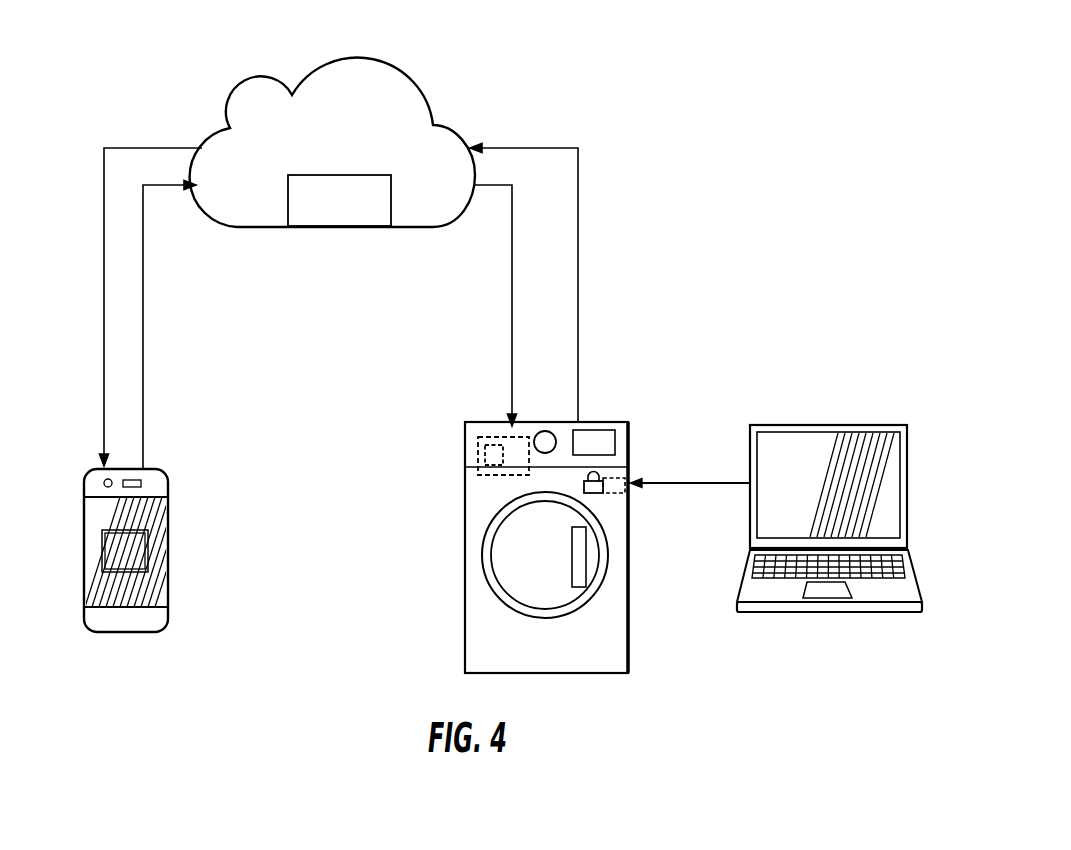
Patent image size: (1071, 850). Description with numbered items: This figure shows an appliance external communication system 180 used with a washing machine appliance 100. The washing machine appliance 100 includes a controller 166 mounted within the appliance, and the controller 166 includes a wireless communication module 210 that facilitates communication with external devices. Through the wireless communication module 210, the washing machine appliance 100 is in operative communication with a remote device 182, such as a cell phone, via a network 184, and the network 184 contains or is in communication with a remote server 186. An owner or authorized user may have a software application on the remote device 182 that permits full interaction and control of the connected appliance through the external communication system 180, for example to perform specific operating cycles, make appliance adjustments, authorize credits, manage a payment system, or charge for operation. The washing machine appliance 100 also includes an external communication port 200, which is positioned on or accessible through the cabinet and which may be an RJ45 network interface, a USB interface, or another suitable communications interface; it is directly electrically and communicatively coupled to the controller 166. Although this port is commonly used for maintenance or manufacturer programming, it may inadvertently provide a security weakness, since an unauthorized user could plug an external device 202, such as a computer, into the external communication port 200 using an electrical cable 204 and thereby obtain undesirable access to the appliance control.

The external communication system 180 is at (760, 96).
The network 184 is at (372, 134).
The remote server 186 is at (357, 211).
The remote device 182 is at (168, 568).
The washing machine appliance 100 is at (450, 605).
The controller 166 is at (514, 455).
The wireless communication module 210 is at (492, 457).
The external communication port 200 is at (622, 475).
The external device 202 is at (822, 427).
The electrical cable 204 is at (697, 486).